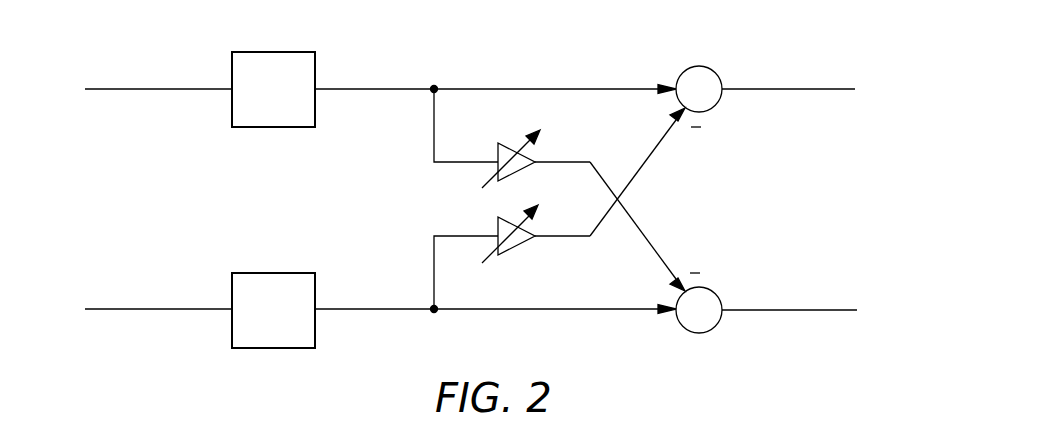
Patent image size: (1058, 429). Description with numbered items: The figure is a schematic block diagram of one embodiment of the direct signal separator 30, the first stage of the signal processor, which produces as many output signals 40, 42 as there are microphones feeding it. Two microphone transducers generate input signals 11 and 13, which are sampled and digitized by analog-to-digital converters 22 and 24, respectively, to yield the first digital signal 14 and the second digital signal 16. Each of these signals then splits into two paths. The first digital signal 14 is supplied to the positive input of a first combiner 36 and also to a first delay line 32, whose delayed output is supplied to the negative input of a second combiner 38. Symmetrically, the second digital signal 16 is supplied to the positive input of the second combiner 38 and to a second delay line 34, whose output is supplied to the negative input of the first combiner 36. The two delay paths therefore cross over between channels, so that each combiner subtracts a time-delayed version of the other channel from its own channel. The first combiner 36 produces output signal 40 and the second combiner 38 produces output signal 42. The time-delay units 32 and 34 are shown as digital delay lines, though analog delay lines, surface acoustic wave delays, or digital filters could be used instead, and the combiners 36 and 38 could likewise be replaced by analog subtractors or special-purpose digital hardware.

The input signal 11 is at (148, 88).
The input signal 13 is at (149, 308).
The first digital signal 14 is at (360, 88).
The second digital signal 16 is at (360, 308).
The analog-to-digital converter 22 is at (293, 128).
The analog-to-digital converter 24 is at (254, 273).
The direct signal separator 30 is at (692, 204).
The first delay line 32 is at (497, 150).
The second delay line 34 is at (515, 247).
The first combiner 36 is at (715, 72).
The second combiner 38 is at (717, 292).
The output signal 40 is at (818, 92).
The output signal 42 is at (820, 309).